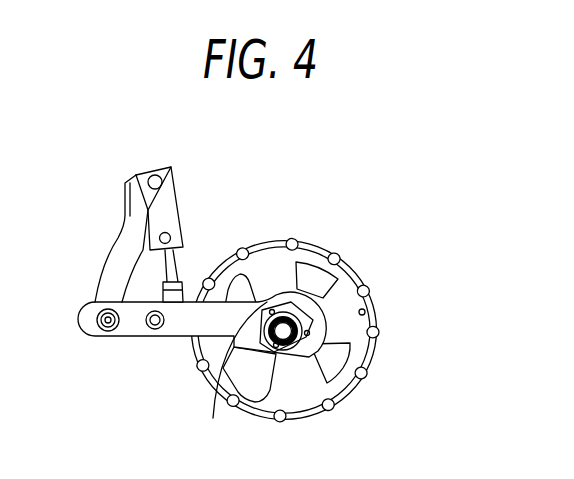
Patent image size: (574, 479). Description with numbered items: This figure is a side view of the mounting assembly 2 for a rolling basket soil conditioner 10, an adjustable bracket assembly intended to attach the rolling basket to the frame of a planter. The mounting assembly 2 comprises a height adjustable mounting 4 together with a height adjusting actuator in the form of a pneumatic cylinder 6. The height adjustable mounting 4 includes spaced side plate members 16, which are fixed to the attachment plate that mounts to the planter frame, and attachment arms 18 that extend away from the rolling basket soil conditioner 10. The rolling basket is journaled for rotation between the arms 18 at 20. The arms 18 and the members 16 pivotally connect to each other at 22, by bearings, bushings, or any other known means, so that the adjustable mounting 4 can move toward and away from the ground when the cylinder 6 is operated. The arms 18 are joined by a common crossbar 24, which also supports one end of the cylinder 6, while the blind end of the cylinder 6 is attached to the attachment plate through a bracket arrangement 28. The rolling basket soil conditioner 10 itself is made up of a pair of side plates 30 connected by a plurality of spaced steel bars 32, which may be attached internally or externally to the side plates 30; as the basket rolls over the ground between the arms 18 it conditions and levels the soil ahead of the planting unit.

The mounting assembly 2 is at (242, 148).
The height adjustable mounting 4 is at (82, 318).
The pneumatic cylinder 6 is at (180, 202).
The rolling basket soil conditioner 10 is at (272, 233).
The side plate members 16 is at (115, 258).
The attachment arms 18 is at (178, 332).
The journal 20 is at (267, 302).
The pivot 22 is at (102, 330).
The common crossbar 24 is at (148, 330).
The bracket arrangement 28 is at (134, 175).
The side plates 30 is at (313, 252).
The steel bars 32 is at (340, 254).